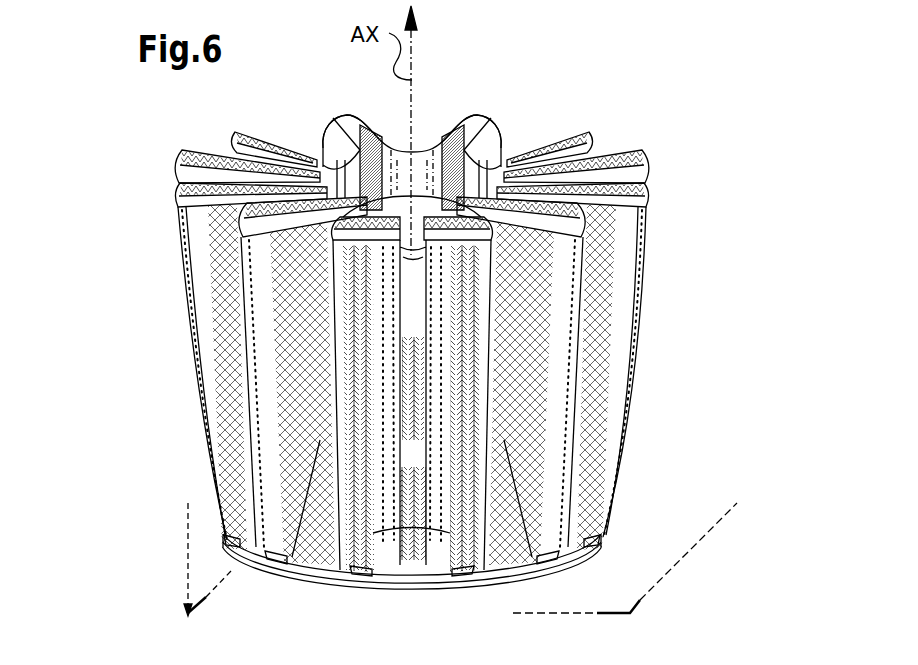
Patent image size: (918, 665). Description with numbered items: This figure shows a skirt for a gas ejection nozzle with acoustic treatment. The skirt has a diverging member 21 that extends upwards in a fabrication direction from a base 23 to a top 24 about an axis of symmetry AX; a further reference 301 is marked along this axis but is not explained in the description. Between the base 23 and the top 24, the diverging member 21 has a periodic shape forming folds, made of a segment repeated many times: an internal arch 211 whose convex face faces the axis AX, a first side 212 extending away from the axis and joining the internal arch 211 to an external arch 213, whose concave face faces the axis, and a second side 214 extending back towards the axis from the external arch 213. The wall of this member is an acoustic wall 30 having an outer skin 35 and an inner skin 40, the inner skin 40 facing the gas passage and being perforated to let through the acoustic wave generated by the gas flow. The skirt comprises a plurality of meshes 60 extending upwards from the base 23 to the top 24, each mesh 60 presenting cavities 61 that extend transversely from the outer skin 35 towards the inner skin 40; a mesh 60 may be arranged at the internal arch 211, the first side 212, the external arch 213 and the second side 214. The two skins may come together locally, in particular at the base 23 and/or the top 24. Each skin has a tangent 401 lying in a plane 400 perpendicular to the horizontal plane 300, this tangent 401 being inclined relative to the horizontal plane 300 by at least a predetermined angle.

The axis arrow 301 is at (413, 58).
The inner skin 40 is at (332, 126).
The internal arch 211 is at (402, 128).
The first side 212 is at (427, 147).
The external arch 213 is at (458, 220).
The second side 214 is at (469, 141).
The top 24 is at (660, 155).
The outer skin 35 is at (167, 234).
The acoustic wall 30 is at (218, 323).
The tangent 401 is at (357, 367).
The diverging member 21 is at (672, 452).
The base 23 is at (592, 563).
The mesh 60 is at (413, 495).
The cavities 61 is at (408, 520).
The horizontal plane 300 is at (722, 516).
The plane 400 is at (212, 597).